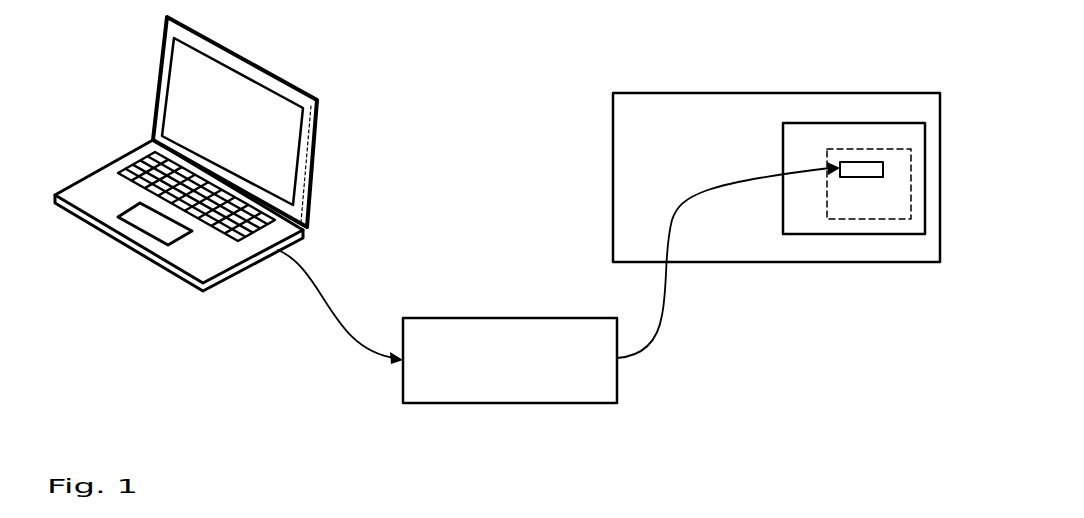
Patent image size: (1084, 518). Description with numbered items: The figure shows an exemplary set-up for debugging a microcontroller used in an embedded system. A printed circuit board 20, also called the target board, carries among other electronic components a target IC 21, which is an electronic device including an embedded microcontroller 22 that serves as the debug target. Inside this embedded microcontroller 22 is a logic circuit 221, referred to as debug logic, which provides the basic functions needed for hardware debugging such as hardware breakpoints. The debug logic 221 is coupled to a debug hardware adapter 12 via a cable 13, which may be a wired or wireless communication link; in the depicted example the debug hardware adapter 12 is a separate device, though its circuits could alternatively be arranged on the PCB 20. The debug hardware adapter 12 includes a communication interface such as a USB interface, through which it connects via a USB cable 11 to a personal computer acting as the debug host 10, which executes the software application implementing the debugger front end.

The debug host 10 is at (338, 60).
The USB cable 11 is at (327, 310).
The debug hardware adapter 12 is at (557, 386).
The cable 13 is at (657, 312).
The printed circuit board 20 is at (686, 124).
The target IC 21 is at (800, 234).
The embedded microcontroller 22 is at (897, 150).
The logic circuit 221 is at (867, 177).